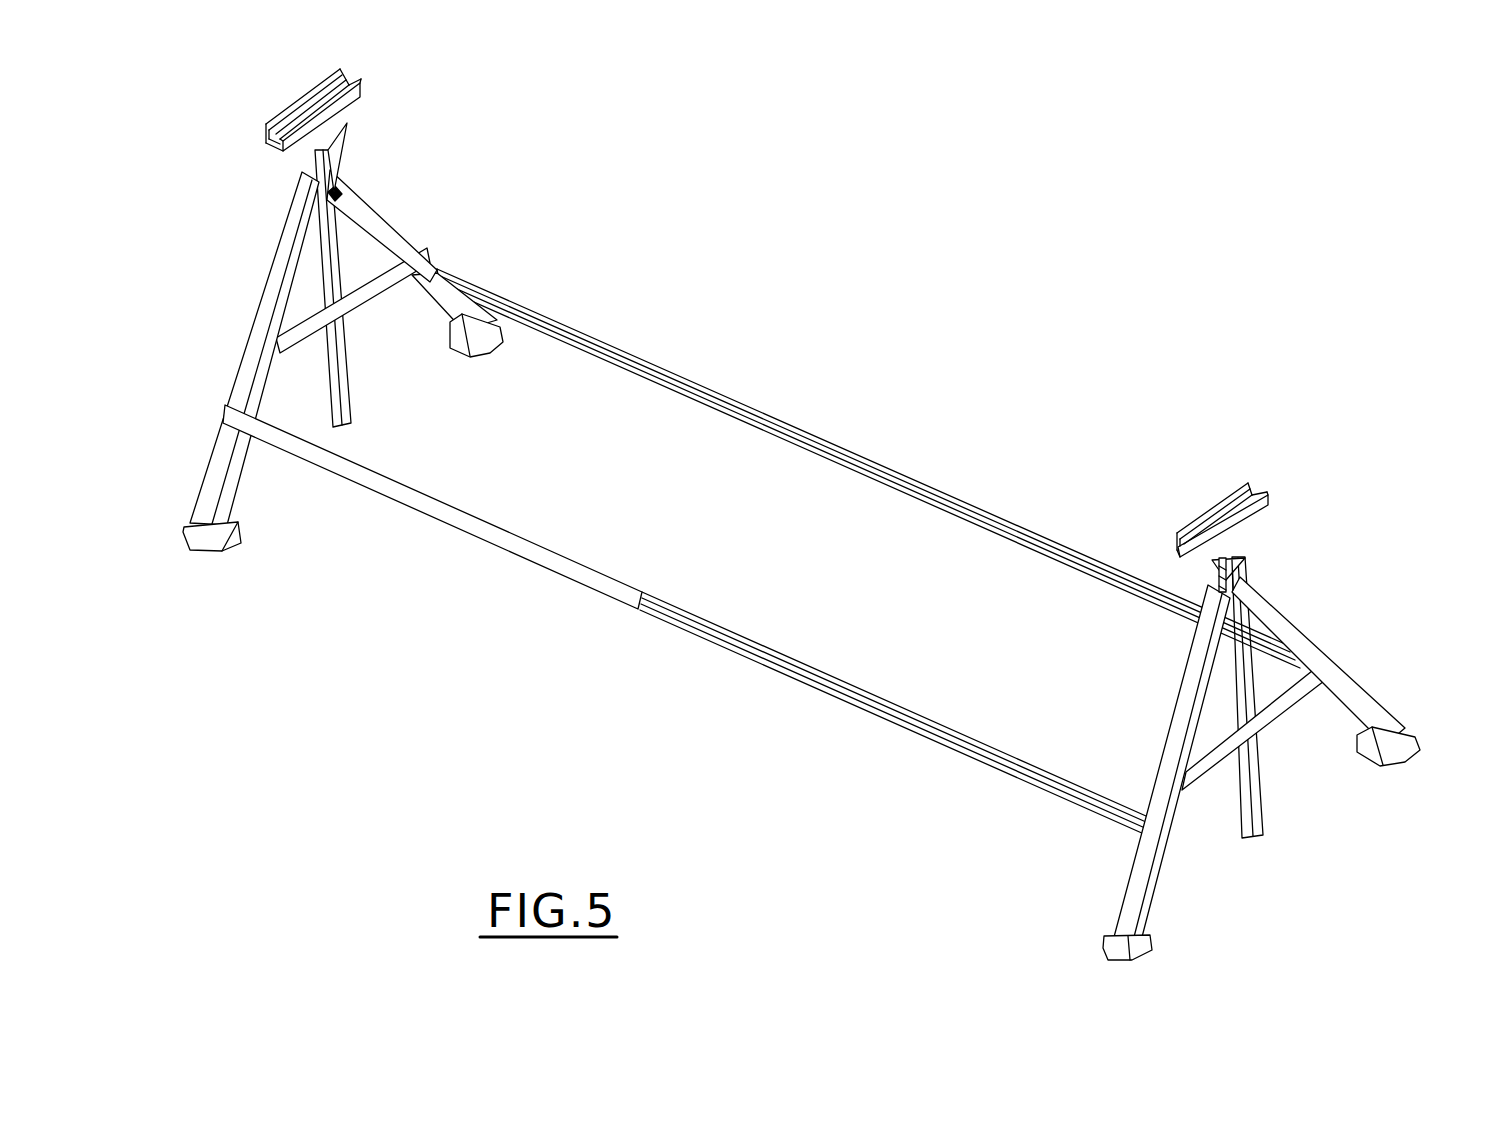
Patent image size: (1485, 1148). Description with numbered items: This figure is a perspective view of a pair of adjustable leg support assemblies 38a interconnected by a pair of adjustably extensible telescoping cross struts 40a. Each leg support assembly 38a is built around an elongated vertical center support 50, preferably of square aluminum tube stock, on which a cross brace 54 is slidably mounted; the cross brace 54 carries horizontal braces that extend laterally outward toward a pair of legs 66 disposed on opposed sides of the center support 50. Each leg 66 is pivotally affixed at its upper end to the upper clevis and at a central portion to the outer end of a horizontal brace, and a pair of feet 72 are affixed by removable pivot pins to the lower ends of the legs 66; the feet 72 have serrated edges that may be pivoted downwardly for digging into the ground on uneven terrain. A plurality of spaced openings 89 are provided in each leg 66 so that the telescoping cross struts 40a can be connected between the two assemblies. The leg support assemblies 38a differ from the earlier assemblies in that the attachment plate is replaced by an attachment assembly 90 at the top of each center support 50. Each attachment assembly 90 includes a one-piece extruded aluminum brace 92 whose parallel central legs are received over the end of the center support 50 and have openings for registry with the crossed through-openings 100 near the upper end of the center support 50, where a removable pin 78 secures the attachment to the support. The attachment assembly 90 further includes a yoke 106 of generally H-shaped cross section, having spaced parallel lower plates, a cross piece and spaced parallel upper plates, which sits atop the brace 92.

The adjustable leg support assembly 38a is at (262, 263).
The extensible telescoping cross strut 40a is at (820, 475).
The center support 50 is at (1262, 813).
The cross brace 54 is at (1286, 718).
The leg 66 is at (1378, 703).
The foot 72 is at (1410, 753).
The removable pin 78 is at (1216, 582).
The spaced openings 89 is at (248, 385).
The attachment assembly 90 is at (370, 100).
The brace 92 is at (336, 139).
The crossed through-openings 100 is at (1243, 577).
The yoke 106 is at (312, 89).